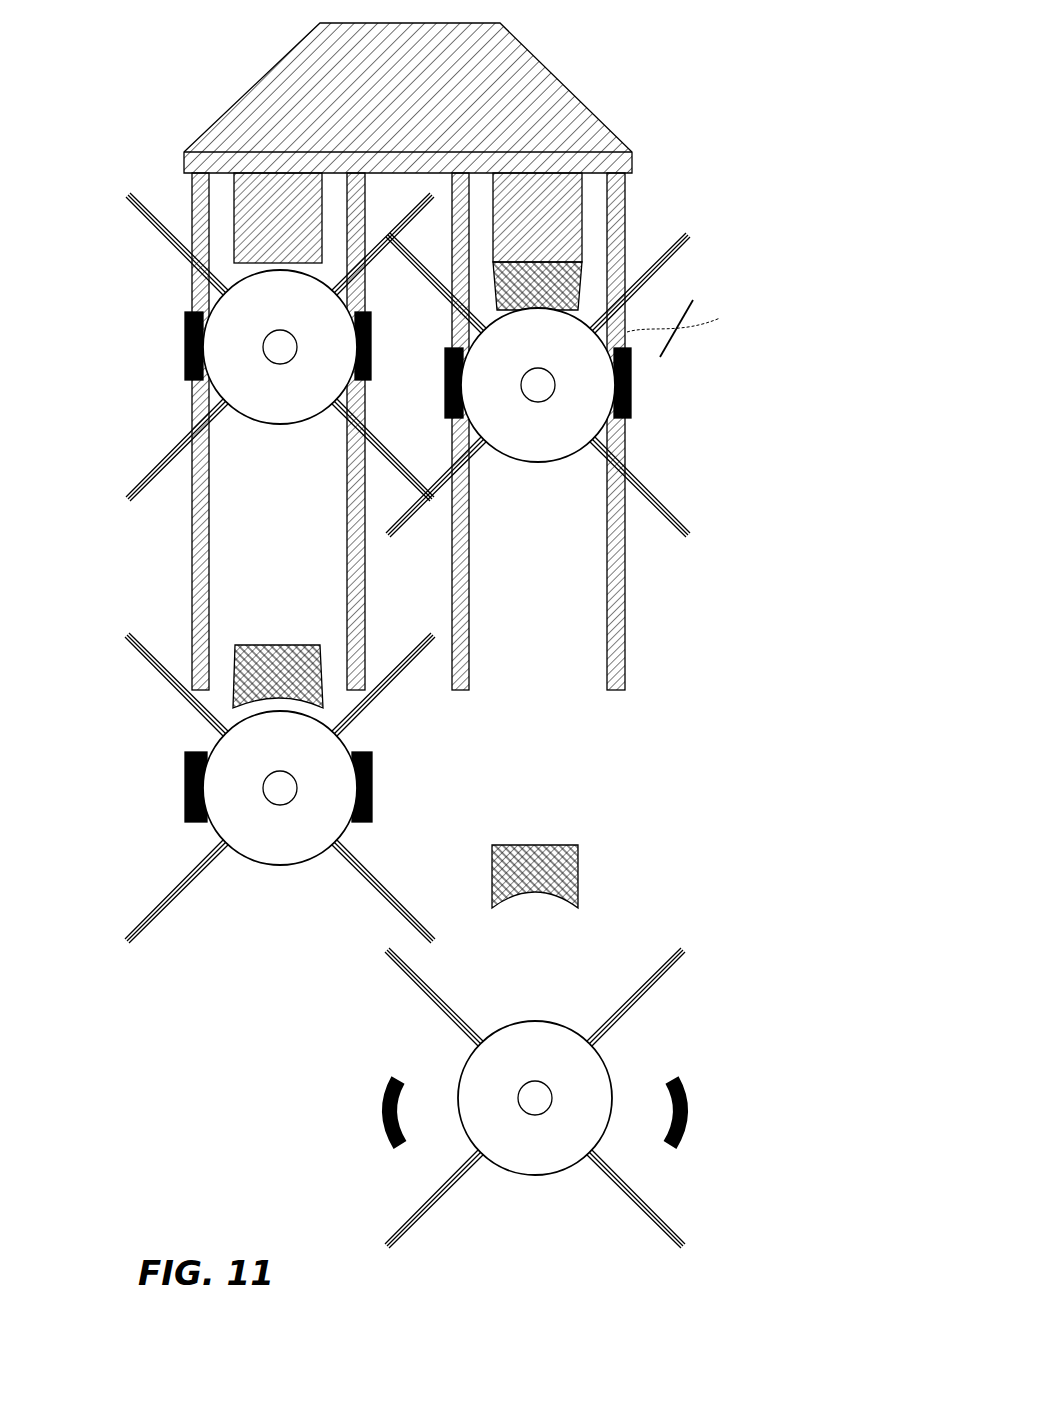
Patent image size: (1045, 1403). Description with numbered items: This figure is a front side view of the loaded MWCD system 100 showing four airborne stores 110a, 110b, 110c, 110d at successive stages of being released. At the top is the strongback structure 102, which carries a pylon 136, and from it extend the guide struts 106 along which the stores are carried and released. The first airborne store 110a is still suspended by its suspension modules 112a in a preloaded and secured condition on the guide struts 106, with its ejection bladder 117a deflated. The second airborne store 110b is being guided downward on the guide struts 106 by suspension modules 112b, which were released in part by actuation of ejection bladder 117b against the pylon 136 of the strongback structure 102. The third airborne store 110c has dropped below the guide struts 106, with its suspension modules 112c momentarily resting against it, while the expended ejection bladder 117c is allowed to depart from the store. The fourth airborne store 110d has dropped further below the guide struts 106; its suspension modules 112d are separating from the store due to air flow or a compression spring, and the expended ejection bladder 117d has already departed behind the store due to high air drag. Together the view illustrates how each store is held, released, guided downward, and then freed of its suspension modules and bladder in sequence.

The MWCD system 100 is at (439, 635).
The strongback structure 102 is at (585, 100).
The guide struts 106 is at (193, 290).
The airborne store 110a is at (281, 425).
The airborne store 110b is at (538, 463).
The airborne store 110c is at (285, 865).
The airborne store 110d is at (536, 1175).
The suspension modules 112a is at (185, 348).
The suspension modules 112b is at (445, 392).
The suspension modules 112c is at (185, 778).
The suspension modules 112d is at (382, 1110).
The ejection bladder 117a is at (236, 263).
The ejection bladder 117b is at (580, 272).
The ejection bladder 117c is at (278, 645).
The ejection bladder 117d is at (578, 846).
The pylon 136 is at (588, 185).